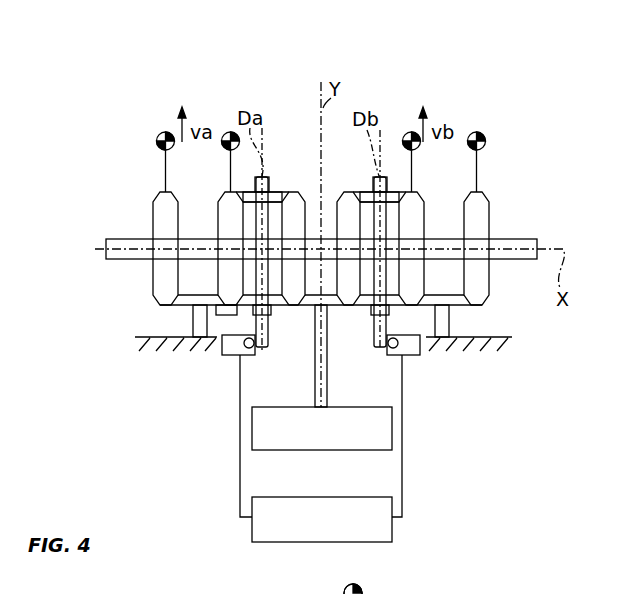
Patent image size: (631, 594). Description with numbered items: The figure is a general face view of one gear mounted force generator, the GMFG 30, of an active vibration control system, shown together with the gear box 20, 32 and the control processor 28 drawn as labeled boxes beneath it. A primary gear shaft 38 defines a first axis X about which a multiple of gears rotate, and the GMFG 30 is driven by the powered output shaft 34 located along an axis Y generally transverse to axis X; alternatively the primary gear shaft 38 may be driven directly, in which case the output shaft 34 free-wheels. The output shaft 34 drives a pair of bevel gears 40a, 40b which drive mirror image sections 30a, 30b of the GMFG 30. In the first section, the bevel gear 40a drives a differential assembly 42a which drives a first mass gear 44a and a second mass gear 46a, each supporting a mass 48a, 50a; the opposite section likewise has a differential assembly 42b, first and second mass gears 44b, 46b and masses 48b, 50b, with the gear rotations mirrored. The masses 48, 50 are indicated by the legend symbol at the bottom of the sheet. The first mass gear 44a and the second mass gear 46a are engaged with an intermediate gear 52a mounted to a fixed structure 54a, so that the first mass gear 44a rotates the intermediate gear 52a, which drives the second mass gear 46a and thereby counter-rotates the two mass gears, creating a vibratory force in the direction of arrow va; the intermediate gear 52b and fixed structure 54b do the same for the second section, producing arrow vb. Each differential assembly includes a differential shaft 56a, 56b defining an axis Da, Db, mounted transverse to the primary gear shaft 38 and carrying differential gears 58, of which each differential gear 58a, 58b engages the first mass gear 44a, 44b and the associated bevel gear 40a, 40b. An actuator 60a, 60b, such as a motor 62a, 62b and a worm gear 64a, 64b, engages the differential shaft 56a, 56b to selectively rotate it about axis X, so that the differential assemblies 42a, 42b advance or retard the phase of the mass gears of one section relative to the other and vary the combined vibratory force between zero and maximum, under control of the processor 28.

The gear box 20 is at (322, 452).
The processor 28 is at (298, 543).
The GMFG 30 is at (534, 122).
The section 30a is at (271, 94).
The section 30b is at (356, 94).
The gear box 32 is at (322, 428).
The output shaft 34 is at (330, 345).
The primary gear shaft 38 is at (530, 240).
The bevel gear 40a is at (298, 191).
The bevel gear 40b is at (345, 191).
The differential assembly 42a is at (275, 157).
The differential assembly 42b is at (388, 145).
The first mass gear 44a is at (225, 193).
The first mass gear 44b is at (420, 191).
The second mass gear 46a is at (155, 197).
The second mass gear 46b is at (484, 198).
The mass 48 is at (362, 592).
The mass 48a is at (229, 132).
The mass 48b is at (412, 132).
The mass 50 is at (353, 589).
The mass 50a is at (166, 132).
The mass 50b is at (477, 132).
The intermediate gear 52a is at (190, 312).
The intermediate gear 52b is at (452, 308).
The fixed structure 54a is at (153, 352).
The fixed structure 54b is at (482, 350).
The differential shaft 56a is at (256, 227).
The differential shaft 56b is at (386, 225).
The differential gear 58 is at (250, 188).
The differential gear 58a is at (257, 309).
The differential gear 58b is at (386, 316).
The actuator 60a is at (261, 374).
The actuator 60b is at (419, 382).
The motor 62a is at (228, 358).
The motor 62b is at (420, 357).
The worm gear 64a is at (257, 352).
The worm gear 64b is at (387, 350).